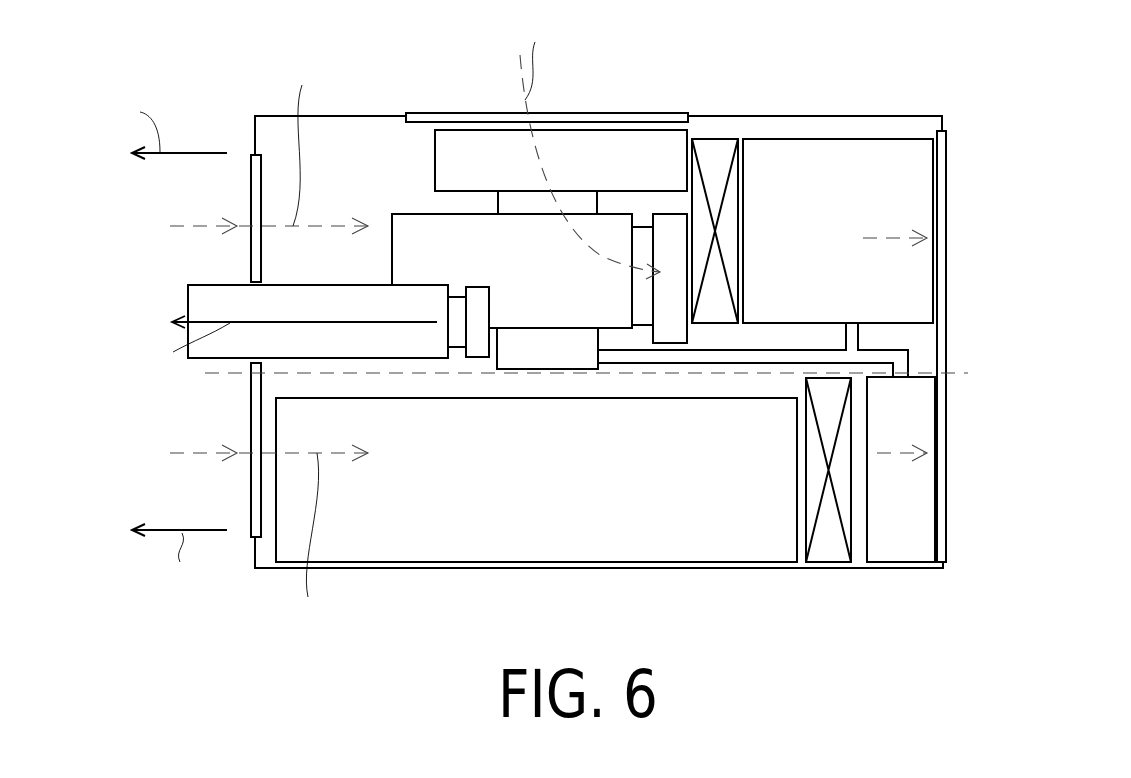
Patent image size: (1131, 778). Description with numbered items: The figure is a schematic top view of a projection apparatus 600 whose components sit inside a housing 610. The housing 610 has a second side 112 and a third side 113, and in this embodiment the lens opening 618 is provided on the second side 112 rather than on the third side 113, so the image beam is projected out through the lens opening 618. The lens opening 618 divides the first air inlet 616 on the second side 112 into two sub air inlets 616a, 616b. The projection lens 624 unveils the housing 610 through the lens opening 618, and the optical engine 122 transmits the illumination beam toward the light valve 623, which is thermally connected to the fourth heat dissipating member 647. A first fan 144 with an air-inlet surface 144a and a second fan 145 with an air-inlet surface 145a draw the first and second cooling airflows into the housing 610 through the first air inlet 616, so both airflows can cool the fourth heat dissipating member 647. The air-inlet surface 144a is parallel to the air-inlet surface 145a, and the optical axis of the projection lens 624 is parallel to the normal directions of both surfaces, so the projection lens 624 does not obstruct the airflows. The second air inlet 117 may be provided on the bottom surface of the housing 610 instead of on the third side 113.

The projection apparatus 600 is at (576, 321).
The housing 610 is at (860, 116).
The second side 112 is at (255, 120).
The third side 113 is at (700, 116).
The second air inlet 117 is at (481, 116).
The optical engine 122 is at (412, 233).
The first fan 144 is at (724, 145).
The air-inlet surface 144a is at (690, 202).
The second fan 145 is at (828, 550).
The air-inlet surface 145a is at (804, 505).
The first air inlet 616 is at (116, 172).
The sub air inlet 616a is at (250, 193).
The sub air inlet 616b is at (250, 421).
The lens opening 618 is at (250, 285).
The light valve 623 is at (457, 337).
The projection lens 624 is at (398, 340).
The fourth heat dissipating member 647 is at (479, 345).